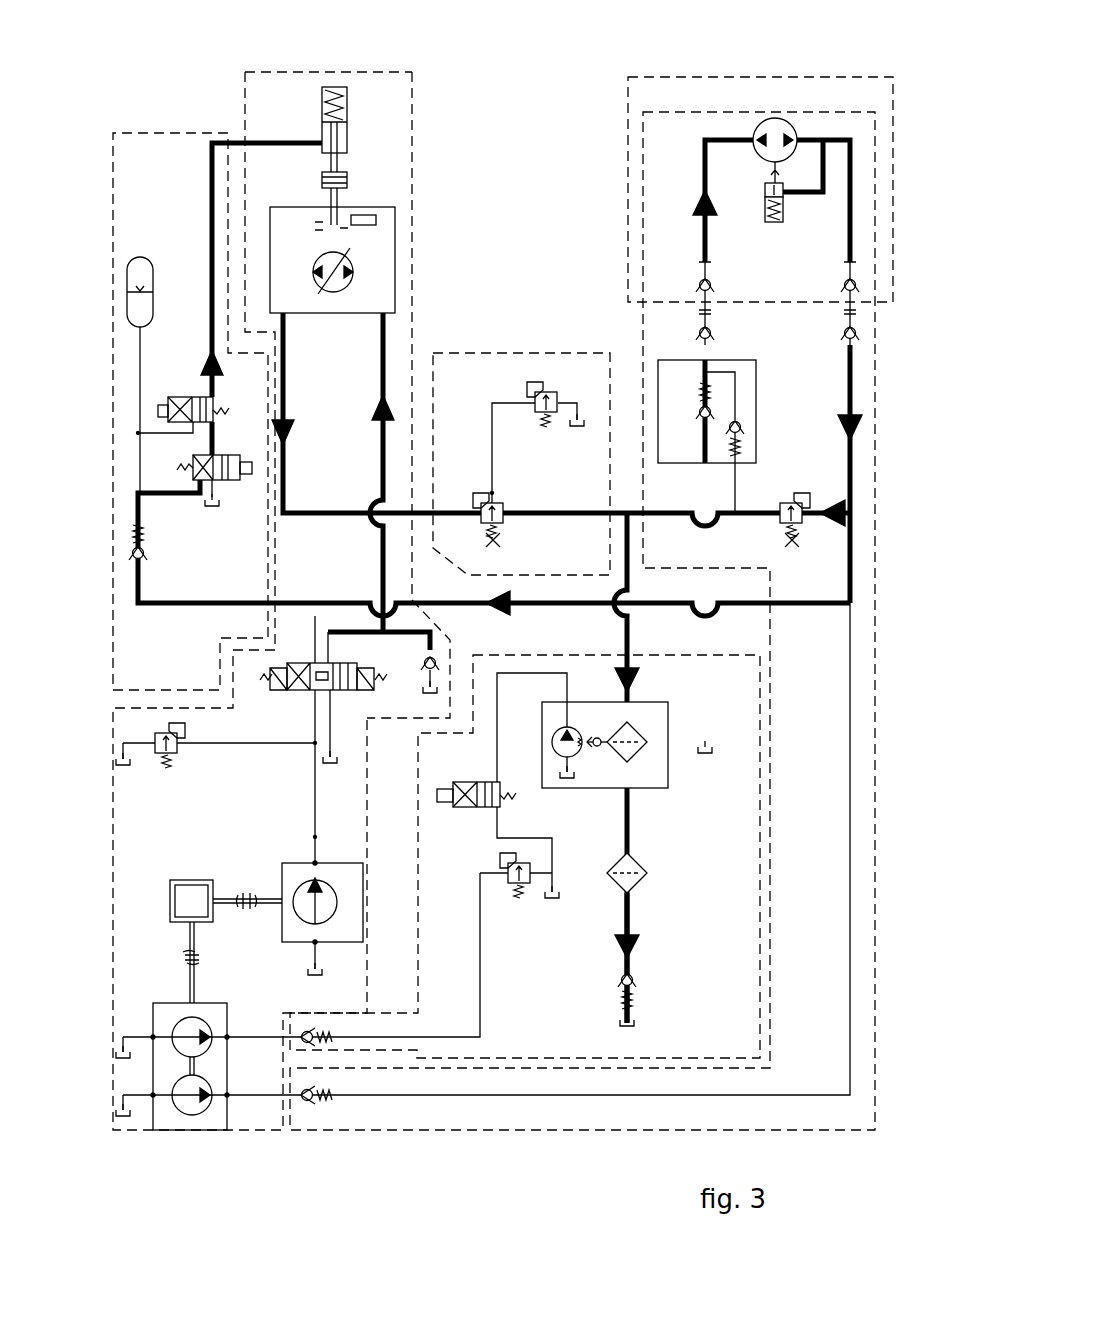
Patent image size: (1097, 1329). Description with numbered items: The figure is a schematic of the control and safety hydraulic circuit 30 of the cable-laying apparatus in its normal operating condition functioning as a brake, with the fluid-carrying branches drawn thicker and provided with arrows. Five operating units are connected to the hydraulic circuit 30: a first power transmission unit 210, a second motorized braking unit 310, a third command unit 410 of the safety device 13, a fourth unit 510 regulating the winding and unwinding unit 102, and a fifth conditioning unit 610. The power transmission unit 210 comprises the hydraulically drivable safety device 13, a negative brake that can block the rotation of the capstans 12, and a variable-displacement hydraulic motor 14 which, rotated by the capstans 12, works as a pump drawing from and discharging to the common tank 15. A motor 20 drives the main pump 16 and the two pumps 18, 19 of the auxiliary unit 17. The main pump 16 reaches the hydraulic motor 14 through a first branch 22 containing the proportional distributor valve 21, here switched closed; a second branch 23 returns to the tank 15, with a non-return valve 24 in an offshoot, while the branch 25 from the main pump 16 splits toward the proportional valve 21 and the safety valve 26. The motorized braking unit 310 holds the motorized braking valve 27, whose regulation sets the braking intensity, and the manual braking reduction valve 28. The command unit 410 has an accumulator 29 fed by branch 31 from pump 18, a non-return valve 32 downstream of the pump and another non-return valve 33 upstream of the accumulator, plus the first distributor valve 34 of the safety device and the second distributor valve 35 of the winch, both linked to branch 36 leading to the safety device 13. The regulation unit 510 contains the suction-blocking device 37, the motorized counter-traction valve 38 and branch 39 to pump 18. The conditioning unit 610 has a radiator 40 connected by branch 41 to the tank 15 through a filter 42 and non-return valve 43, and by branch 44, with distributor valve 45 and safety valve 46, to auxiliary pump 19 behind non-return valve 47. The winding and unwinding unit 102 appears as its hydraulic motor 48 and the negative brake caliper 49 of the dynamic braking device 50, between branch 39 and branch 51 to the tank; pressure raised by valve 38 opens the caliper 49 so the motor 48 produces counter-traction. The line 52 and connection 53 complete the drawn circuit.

The capstans 12 is at (347, 176).
The safety device 13 is at (338, 133).
The hydraulic motor 14 is at (375, 250).
The tank 15 is at (208, 508).
The main pump 16 is at (295, 928).
The auxiliary unit 17 is at (163, 1012).
The pump 18 is at (188, 1105).
The pump 19 is at (195, 1020).
The motor 20 is at (190, 900).
The distributor valve 21 is at (297, 700).
The first branch 22 is at (284, 370).
The second branch 23 is at (382, 440).
The non-return valve 24 is at (435, 660).
The branch 25 is at (313, 845).
The safety valve 26 is at (173, 752).
The motorized braking valve 27 is at (496, 512).
The braking reduction valve 28 is at (552, 400).
The accumulator 29 is at (140, 275).
The hydraulic circuit 30 is at (195, 108).
The branch 31 is at (136, 517).
The non-return valve 32 is at (306, 1100).
The non-return valve 33 is at (135, 556).
The first distributor valve 34 is at (203, 470).
The second distributor valve 35 is at (180, 410).
The branch 36 is at (212, 180).
The device to block the suction 37 is at (750, 398).
The motorized counter-traction valve 38 is at (790, 508).
The branch 39 is at (850, 252).
The radiator 40 is at (650, 775).
The branch 41 is at (629, 914).
The filter 42 is at (645, 876).
The non-return valve 43 is at (631, 978).
The branch 44 is at (497, 740).
The distributor valve 45 is at (450, 790).
The safety valve 46 is at (515, 882).
The non-return valve 47 is at (305, 1035).
The hydraulic motor 48 is at (775, 130).
The negative brake caliper 49 is at (765, 188).
The dynamic braking device 50 is at (797, 200).
The branch 51 is at (708, 236).
The return line 52 is at (594, 730).
The line 53 is at (785, 172).
The winding and unwinding unit 102 is at (625, 102).
The first power transmission unit 210 is at (424, 200).
The second motorized braking unit 310 is at (488, 346).
The third command unit 410 is at (105, 168).
The fourth unit 510 is at (636, 336).
The fifth conditioning unit 610 is at (735, 648).